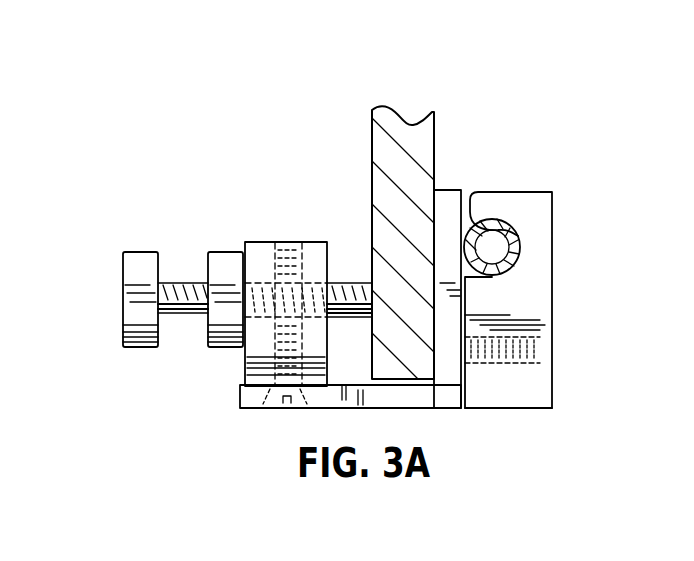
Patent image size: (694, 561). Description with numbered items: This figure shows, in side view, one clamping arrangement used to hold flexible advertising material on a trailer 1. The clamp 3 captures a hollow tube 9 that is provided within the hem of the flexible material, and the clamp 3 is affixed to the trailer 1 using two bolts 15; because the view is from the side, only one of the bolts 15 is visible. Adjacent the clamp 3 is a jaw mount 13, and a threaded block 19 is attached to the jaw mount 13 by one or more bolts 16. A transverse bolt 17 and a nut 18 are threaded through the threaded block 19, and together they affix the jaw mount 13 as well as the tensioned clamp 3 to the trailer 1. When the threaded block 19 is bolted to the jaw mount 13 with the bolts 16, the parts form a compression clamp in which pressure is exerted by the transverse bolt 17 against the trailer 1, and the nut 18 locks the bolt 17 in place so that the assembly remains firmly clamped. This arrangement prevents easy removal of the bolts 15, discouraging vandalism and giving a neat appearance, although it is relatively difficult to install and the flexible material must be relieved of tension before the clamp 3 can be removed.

The trailer 1 is at (423, 143).
The clamp 3 is at (547, 266).
The hollow tube 9 is at (518, 232).
The jaw mount 13 is at (448, 200).
The bolts 15 is at (558, 352).
The bolts 16 is at (315, 243).
The transverse bolt 17 is at (140, 252).
The nut 18 is at (228, 252).
The threaded block 19 is at (243, 371).